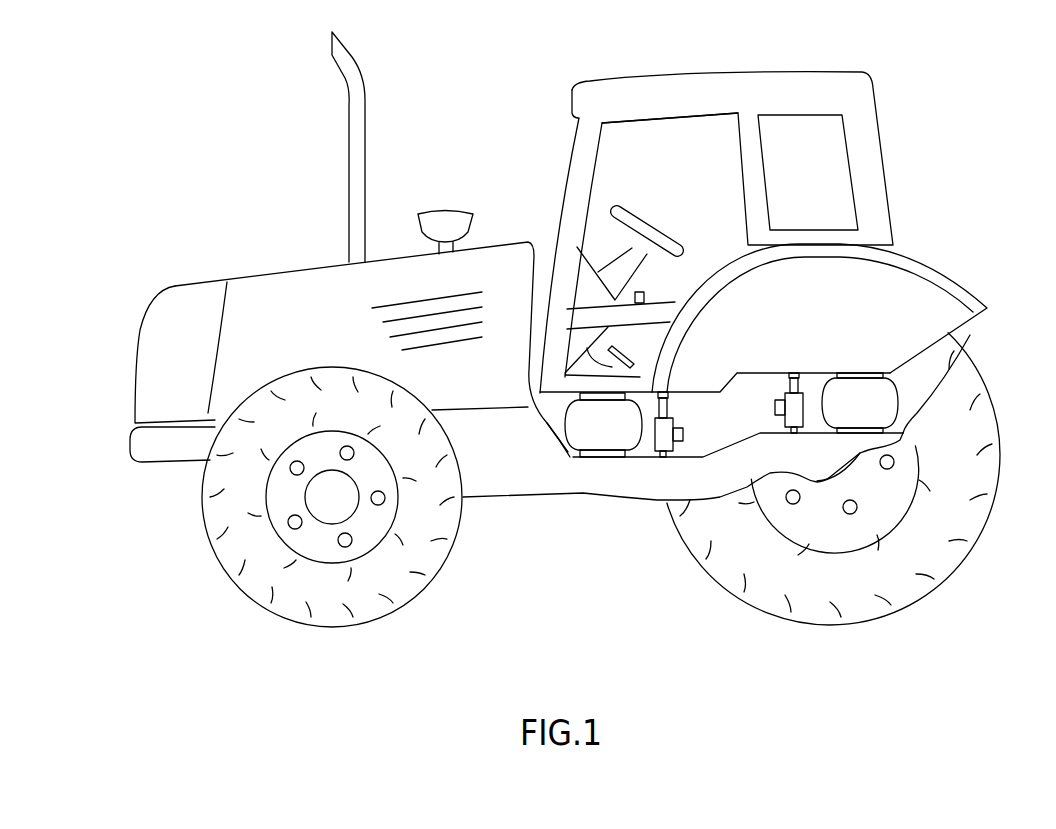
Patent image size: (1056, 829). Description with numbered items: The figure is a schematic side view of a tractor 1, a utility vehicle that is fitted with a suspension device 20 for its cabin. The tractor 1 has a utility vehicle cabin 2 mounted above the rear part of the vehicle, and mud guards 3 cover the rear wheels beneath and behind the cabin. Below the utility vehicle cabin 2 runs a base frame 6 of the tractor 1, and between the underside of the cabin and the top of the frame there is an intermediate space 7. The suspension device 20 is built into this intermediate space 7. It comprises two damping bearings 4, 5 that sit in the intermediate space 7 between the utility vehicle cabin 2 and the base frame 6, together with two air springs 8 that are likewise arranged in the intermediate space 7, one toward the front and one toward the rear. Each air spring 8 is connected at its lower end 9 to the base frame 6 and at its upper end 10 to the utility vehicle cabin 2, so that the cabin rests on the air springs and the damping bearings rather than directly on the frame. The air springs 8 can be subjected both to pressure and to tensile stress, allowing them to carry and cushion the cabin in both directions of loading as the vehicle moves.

The tractor 1 is at (908, 108).
The utility vehicle cabin 2 is at (755, 78).
The mud guards 3 is at (903, 292).
The damping bearing 4 is at (665, 428).
The damping bearing 5 is at (798, 403).
The base frame 6 is at (588, 473).
The intermediate space 7 is at (747, 408).
The air spring 8 is at (605, 433).
The lower end 9 is at (573, 455).
The upper end 10 is at (593, 397).
The suspension device 20 is at (560, 448).